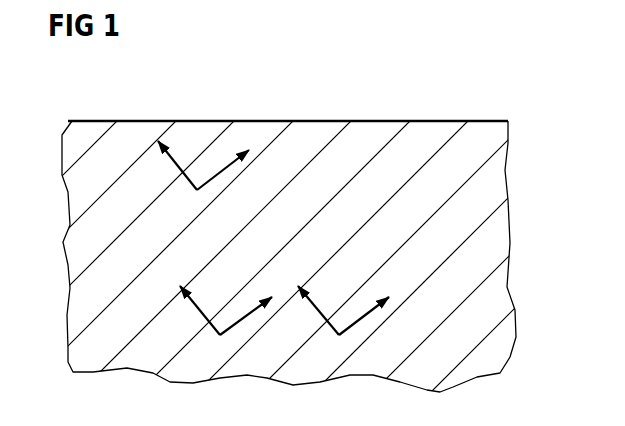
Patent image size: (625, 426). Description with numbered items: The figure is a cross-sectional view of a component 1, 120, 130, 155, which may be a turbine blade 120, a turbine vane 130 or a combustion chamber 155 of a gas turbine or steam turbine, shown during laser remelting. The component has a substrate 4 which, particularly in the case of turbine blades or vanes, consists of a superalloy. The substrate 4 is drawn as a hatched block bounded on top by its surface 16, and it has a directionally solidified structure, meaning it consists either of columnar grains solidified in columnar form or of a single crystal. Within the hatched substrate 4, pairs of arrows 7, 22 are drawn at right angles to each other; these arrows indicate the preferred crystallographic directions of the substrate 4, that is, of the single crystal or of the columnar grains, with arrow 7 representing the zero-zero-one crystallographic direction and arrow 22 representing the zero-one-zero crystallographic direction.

The component 1 is at (312, 212).
The turbine blade 120 is at (312, 212).
The turbine vane 130 is at (312, 212).
The combustion chamber 155 is at (312, 212).
The substrate 4 is at (507, 171).
The surface 16 is at (273, 119).
The arrow 7 is at (172, 163).
The arrow 22 is at (223, 177).